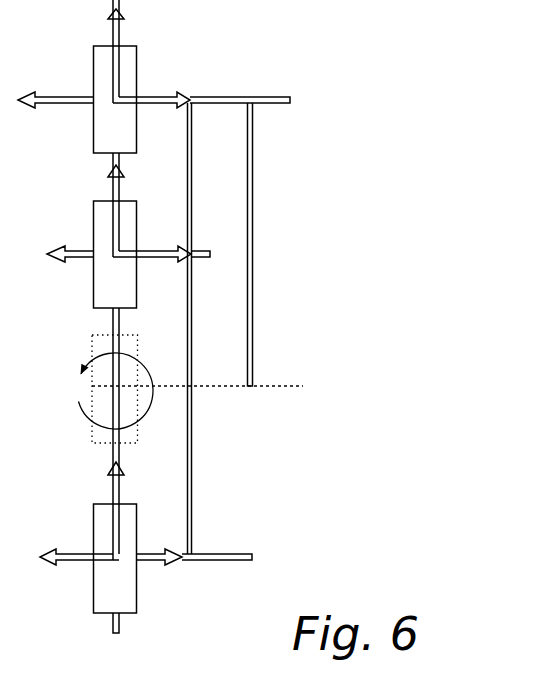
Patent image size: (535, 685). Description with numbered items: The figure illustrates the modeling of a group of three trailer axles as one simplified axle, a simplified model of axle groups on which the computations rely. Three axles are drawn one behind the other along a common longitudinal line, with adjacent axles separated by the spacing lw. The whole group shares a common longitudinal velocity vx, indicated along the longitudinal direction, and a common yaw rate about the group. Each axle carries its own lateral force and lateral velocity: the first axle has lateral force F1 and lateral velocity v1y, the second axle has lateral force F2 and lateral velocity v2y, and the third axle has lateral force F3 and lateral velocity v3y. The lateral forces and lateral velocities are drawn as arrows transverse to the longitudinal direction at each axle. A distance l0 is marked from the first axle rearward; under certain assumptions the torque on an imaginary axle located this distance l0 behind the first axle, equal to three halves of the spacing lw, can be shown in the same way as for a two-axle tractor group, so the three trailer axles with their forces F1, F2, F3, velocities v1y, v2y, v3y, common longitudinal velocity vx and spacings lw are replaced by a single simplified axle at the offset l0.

The common longitudinal velocity vx is at (130, 280).
The lateral velocity of first axle v1y is at (201, 80).
The lateral velocity of second axle v2y is at (161, 270).
The lateral velocity of third axle v3y is at (79, 538).
The lateral force on first axle F1 is at (55, 77).
The lateral force on second axle F2 is at (57, 238).
The lateral force on third axle F3 is at (195, 536).
The axle spacing lw is at (209, 328).
The imaginary axle offset l0 is at (262, 244).